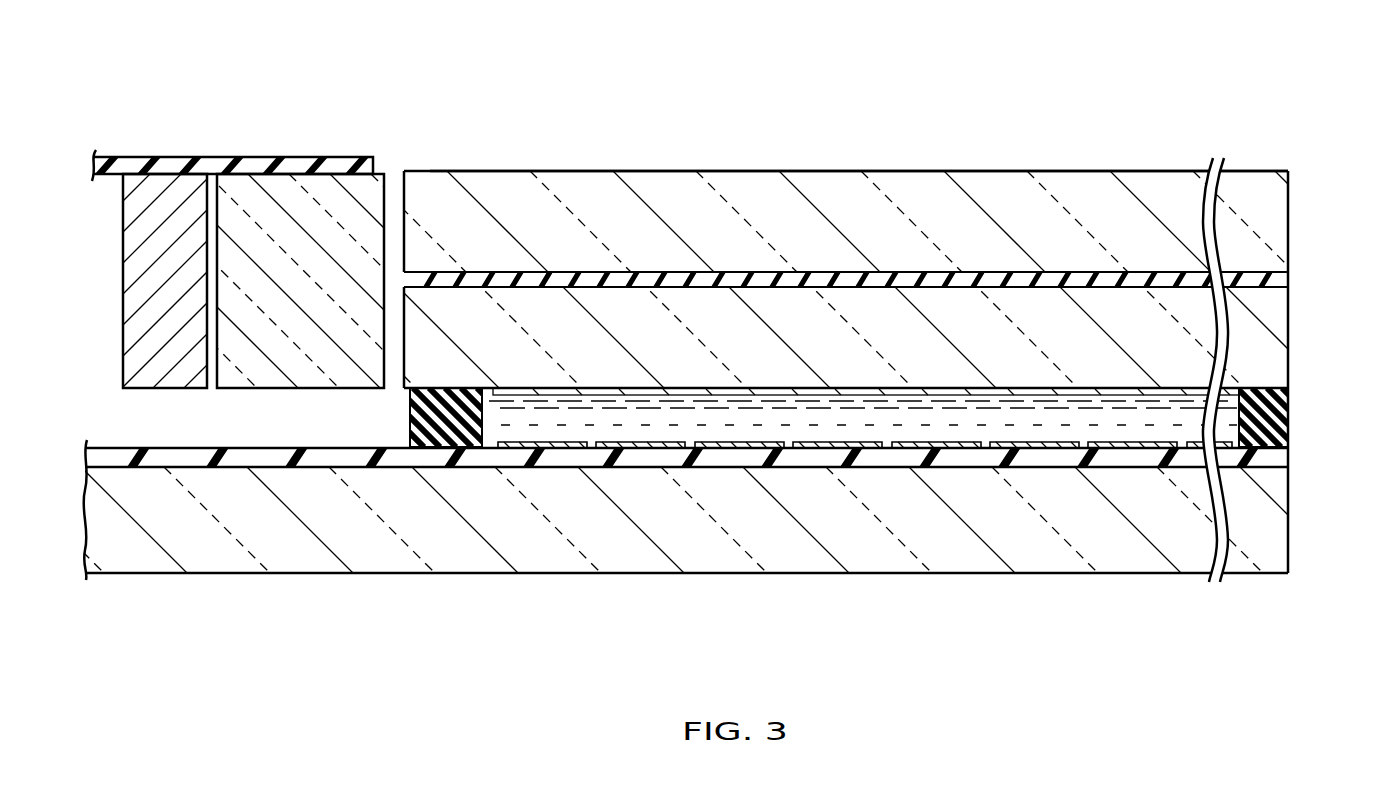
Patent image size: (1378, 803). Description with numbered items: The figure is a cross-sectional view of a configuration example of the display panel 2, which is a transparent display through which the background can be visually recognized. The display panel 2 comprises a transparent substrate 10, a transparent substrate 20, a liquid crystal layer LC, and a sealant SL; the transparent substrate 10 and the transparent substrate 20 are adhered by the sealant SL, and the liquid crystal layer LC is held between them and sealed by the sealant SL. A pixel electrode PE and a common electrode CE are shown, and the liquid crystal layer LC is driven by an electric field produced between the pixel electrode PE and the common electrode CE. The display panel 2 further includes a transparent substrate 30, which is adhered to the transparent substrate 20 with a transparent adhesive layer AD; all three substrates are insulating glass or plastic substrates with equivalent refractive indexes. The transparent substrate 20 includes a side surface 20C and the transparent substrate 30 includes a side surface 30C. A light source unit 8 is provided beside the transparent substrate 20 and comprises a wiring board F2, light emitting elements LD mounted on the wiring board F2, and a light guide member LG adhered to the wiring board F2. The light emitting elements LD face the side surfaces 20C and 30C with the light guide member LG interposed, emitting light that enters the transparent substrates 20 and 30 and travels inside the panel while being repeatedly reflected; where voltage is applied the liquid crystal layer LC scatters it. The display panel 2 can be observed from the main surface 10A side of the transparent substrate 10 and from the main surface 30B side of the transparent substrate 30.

The light source unit 8 is at (292, 222).
The light emitting elements LD is at (168, 192).
The light guide member LG is at (257, 193).
The wiring board F2 is at (306, 166).
The transparent substrate 30 is at (790, 173).
The main surface 30B is at (1014, 163).
The side surface 30C is at (394, 223).
The transparent substrate 20 is at (790, 253).
The side surface 20C is at (394, 355).
The transparent adhesive layer AD is at (1280, 279).
The sealant SL is at (410, 423).
The common electrode CE is at (824, 392).
The liquid crystal layer LC is at (767, 432).
The pixel electrode PE is at (706, 448).
The transparent substrate 10 is at (673, 551).
The main surface 10A is at (1007, 584).
The display panel 2 is at (689, 368).